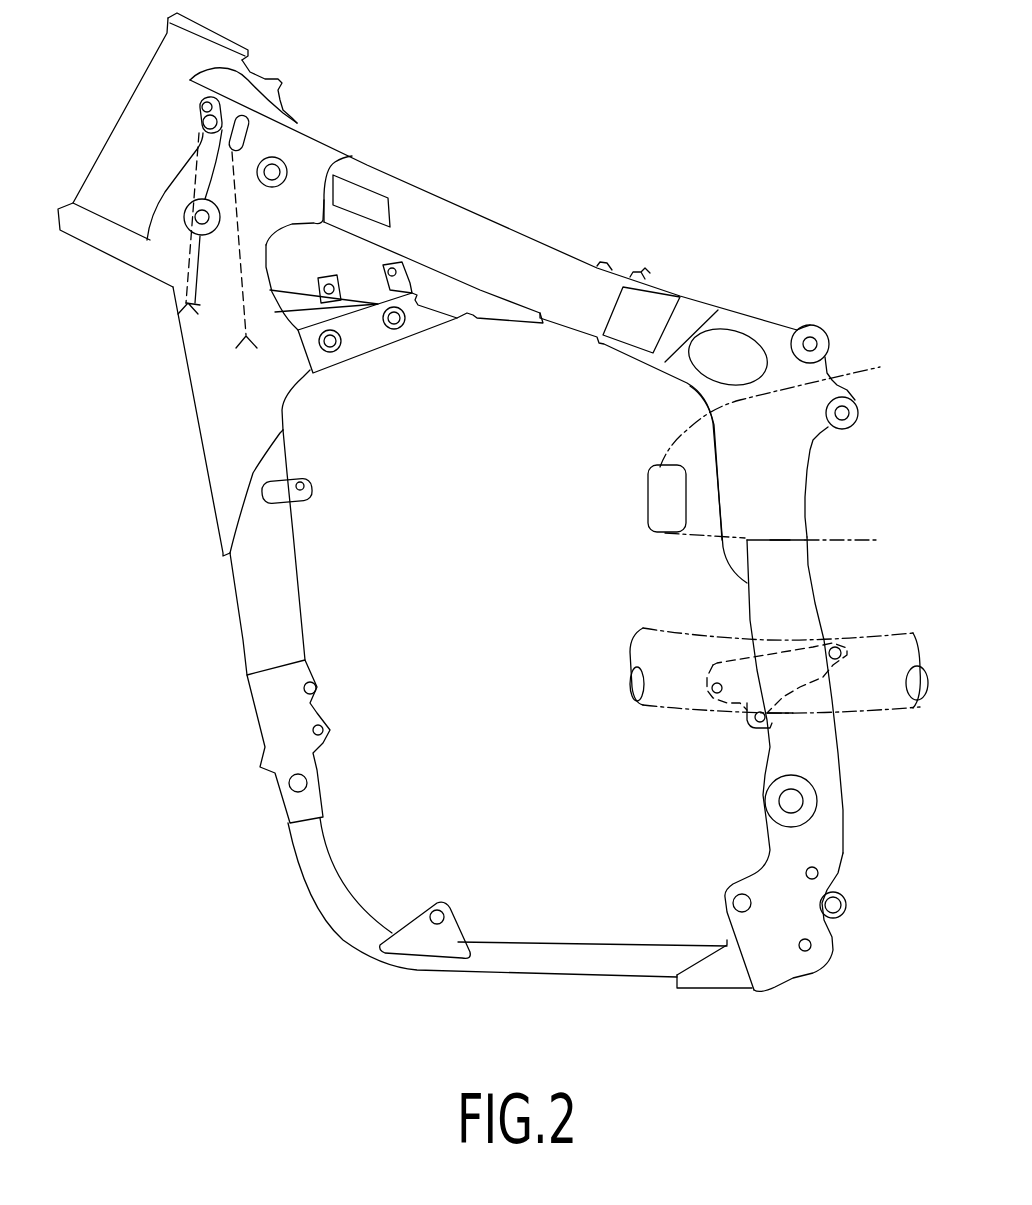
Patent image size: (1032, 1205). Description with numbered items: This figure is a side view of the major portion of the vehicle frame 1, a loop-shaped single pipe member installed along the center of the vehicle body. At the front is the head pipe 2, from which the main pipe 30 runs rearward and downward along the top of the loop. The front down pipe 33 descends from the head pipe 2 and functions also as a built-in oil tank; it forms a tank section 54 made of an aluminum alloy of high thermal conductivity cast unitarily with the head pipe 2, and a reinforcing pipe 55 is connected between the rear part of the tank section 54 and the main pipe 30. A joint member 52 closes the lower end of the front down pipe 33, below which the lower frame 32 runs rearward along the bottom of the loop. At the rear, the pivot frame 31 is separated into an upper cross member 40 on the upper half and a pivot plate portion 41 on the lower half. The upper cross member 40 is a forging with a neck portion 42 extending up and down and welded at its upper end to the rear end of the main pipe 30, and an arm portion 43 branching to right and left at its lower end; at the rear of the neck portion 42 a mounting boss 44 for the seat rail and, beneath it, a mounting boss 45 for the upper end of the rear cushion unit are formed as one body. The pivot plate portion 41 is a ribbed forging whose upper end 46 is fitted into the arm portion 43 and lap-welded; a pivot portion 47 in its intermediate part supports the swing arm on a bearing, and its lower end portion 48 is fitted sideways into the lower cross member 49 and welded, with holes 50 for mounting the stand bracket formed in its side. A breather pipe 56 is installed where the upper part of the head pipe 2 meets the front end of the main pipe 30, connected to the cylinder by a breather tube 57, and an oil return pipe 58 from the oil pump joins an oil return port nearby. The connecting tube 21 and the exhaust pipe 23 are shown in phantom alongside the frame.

The vehicle frame 1 is at (492, 82).
The head pipe 2 is at (140, 128).
The connecting tube 21 is at (680, 450).
The exhaust pipe 23 is at (641, 657).
The main pipe 30 is at (563, 253).
The pivot frame 31 is at (713, 600).
The lower frame 32 is at (550, 943).
The front down pipe 33 is at (347, 593).
The upper cross member 40 is at (905, 503).
The pivot plate portion 41 is at (900, 617).
The neck portion 42 is at (860, 466).
The arm portion 43 is at (893, 567).
The mounting boss 44 is at (848, 300).
The mounting boss 45 is at (895, 405).
The upper end 46 is at (747, 558).
The pivot portion 47 is at (780, 803).
The lower end portion 48 is at (827, 1027).
The lower cross member 49 is at (703, 1023).
The holes 50 is at (880, 964).
The joint member 52 is at (210, 740).
The tank section 54 is at (167, 457).
The reinforcing pipe 55 is at (393, 410).
The breather pipe 56 is at (330, 110).
The breather tube 57 is at (303, 253).
The oil return pipe 58 is at (135, 307).